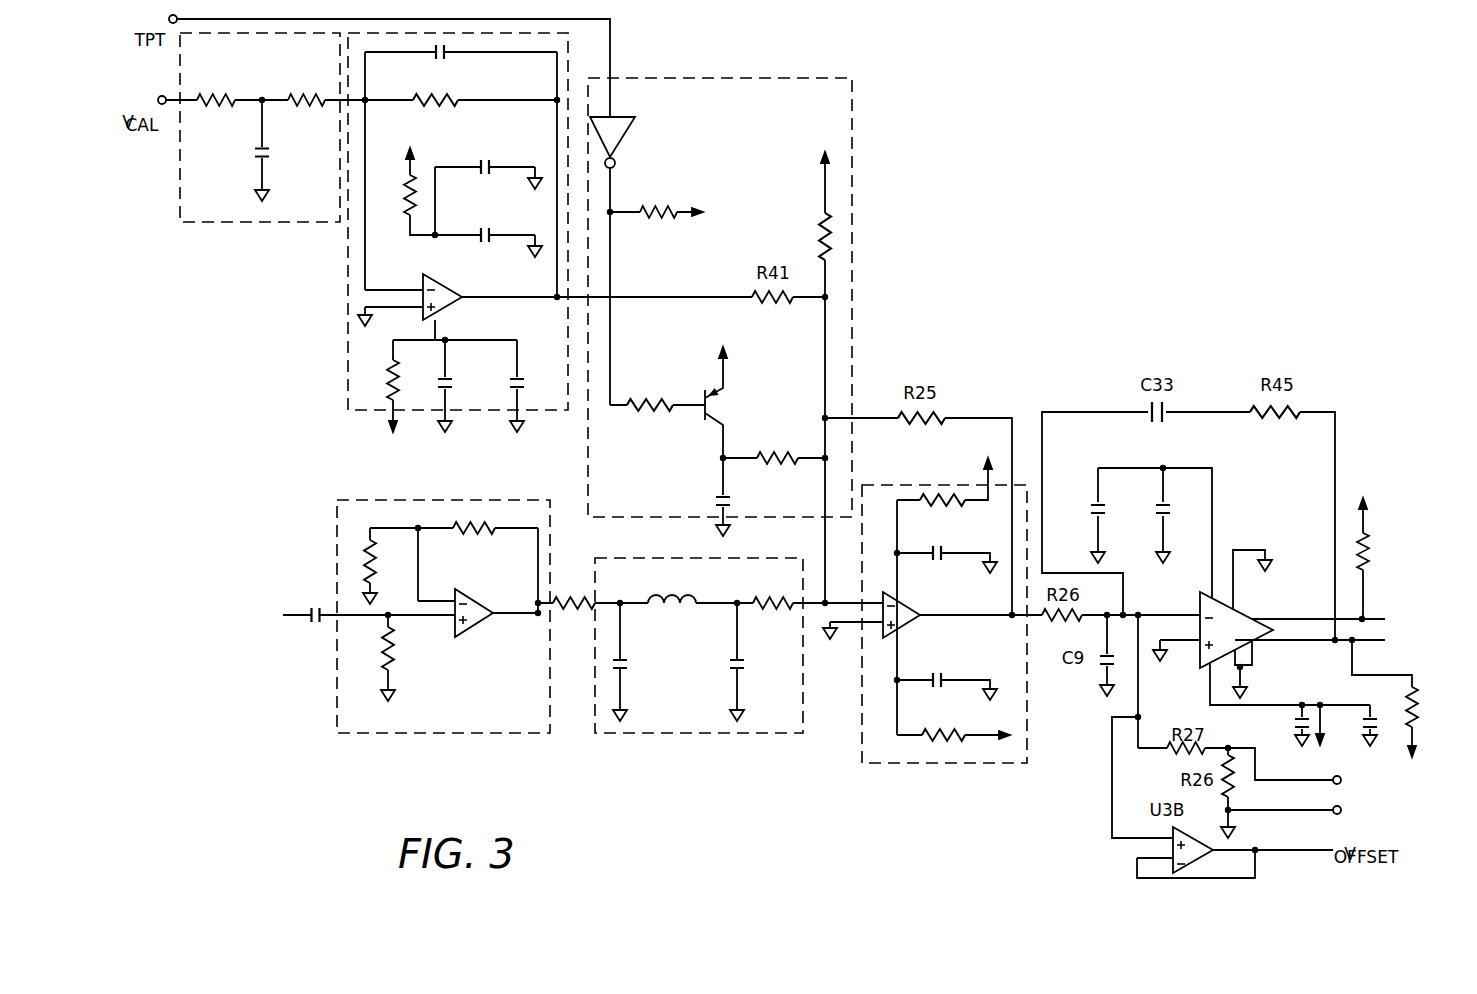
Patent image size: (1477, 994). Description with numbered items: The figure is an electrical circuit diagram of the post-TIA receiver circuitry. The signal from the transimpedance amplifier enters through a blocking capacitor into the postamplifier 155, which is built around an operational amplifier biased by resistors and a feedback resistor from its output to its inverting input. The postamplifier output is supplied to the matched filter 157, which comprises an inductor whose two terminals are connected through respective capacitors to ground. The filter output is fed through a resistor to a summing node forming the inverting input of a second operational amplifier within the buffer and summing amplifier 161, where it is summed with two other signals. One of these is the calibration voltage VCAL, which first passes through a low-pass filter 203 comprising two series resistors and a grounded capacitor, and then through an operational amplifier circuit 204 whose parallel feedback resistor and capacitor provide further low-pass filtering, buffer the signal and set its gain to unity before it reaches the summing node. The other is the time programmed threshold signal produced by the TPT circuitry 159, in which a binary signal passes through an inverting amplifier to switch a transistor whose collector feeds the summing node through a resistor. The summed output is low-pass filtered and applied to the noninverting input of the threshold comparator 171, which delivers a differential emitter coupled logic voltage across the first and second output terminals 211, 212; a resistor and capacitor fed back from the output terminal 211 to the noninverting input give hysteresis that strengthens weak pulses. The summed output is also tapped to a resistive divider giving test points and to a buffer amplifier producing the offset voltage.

The postamplifier 155 is at (337, 502).
The matched filter 157 is at (790, 733).
The TPT circuitry 159 is at (852, 110).
The buffer and summing amplifier 161 is at (958, 763).
The threshold comparator 171 is at (1193, 655).
The low-pass filter 203 is at (238, 223).
The operational amplifier circuit 204 is at (347, 327).
The first output terminal 211 is at (1308, 642).
The second output terminal 212 is at (1310, 607).